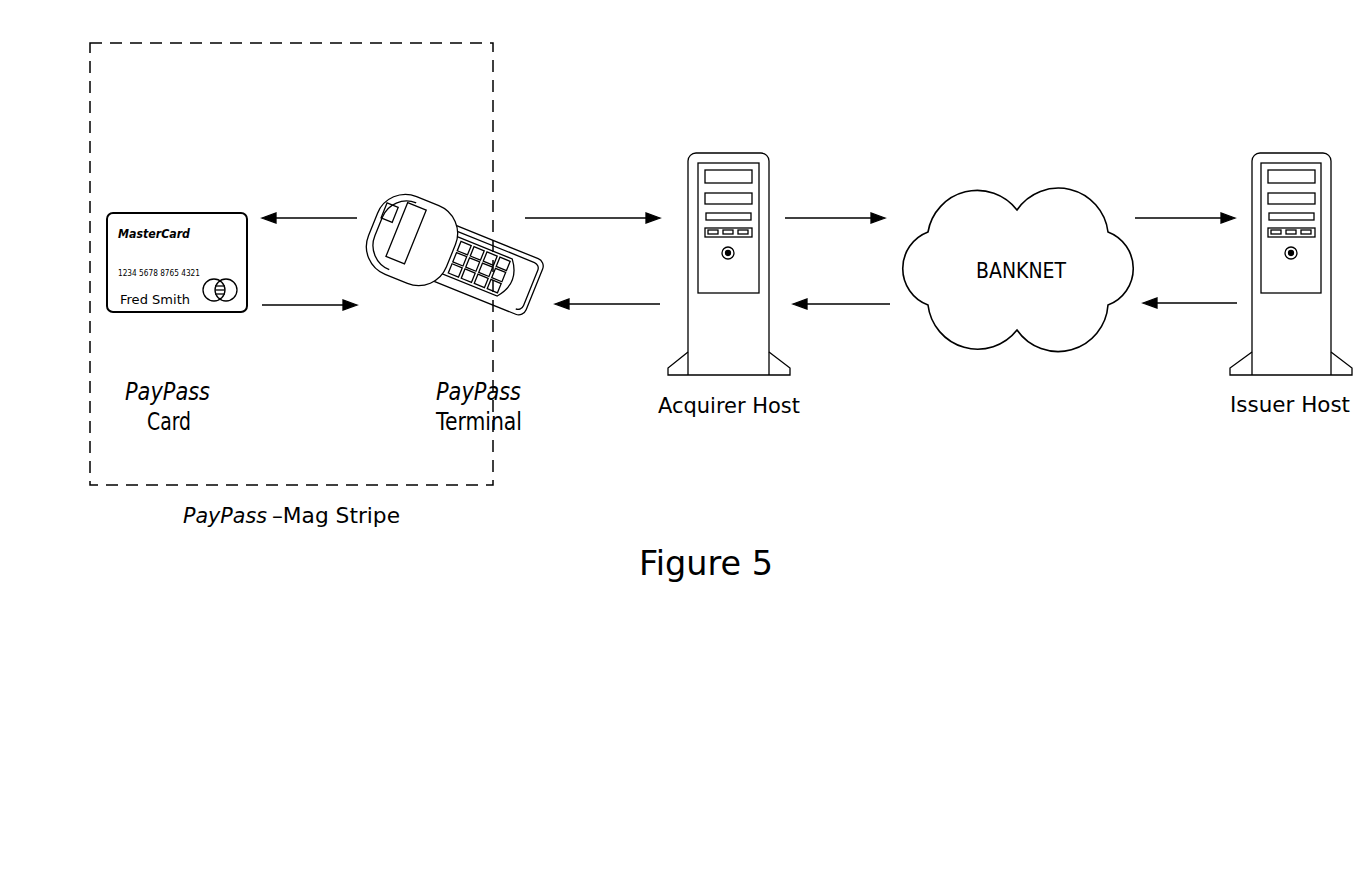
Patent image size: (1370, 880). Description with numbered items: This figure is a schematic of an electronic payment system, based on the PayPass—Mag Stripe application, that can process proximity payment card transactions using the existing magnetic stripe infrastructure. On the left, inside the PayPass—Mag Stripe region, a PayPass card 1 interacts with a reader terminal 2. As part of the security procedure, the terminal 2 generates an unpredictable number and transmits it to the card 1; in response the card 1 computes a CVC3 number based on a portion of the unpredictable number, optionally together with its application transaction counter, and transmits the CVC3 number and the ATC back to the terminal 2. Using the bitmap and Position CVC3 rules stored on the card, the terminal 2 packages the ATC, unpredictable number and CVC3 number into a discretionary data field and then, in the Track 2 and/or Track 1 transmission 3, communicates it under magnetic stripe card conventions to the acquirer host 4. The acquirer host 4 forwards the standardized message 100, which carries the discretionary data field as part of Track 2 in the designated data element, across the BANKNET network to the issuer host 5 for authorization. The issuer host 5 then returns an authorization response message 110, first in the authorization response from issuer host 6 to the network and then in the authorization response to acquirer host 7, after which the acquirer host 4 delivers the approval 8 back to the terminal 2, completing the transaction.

The PayPass card 1 is at (309, 186).
The reader terminal 2 is at (329, 303).
The Track 2 and/or Track 1 transmission 3 is at (589, 204).
The acquirer host 4 is at (834, 187).
The issuer host 5 is at (1180, 187).
The authorization response from issuer host 6 is at (1190, 273).
The authorization response to acquirer host 7 is at (841, 275).
The approval 8 is at (598, 329).
The standardized message 100 is at (1009, 187).
The authorization response message 110 is at (1015, 274).